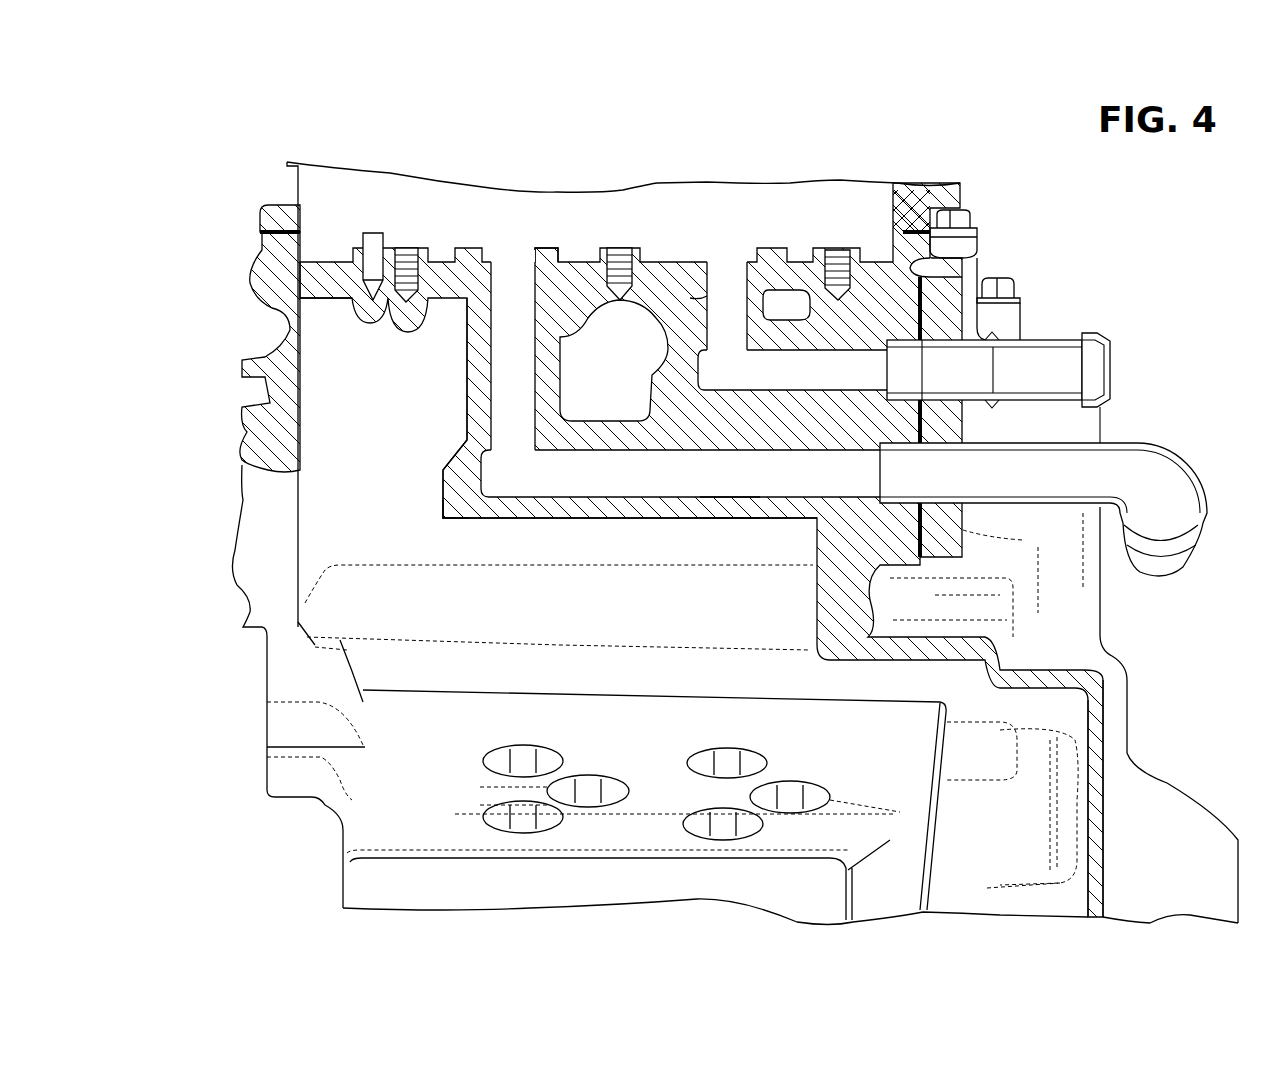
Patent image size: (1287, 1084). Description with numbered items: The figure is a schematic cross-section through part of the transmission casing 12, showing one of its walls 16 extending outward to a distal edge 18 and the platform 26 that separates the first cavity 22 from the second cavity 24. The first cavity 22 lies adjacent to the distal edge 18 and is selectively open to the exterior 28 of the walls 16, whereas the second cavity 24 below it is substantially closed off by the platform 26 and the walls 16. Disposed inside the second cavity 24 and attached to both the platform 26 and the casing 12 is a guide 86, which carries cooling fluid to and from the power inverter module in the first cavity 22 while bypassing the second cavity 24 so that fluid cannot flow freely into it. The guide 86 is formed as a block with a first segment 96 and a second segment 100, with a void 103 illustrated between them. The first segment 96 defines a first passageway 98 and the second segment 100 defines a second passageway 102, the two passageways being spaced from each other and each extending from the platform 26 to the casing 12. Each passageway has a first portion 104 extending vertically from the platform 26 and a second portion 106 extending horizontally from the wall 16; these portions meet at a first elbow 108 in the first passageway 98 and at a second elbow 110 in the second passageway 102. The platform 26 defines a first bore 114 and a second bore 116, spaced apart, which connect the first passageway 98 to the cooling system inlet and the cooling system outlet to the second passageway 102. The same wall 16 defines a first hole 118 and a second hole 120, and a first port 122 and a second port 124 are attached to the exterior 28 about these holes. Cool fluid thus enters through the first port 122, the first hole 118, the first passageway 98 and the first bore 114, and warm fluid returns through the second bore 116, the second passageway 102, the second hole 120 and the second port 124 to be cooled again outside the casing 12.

The casing 12 is at (1095, 725).
The walls 16 is at (282, 347).
The distal edge 18 is at (260, 218).
The first cavity 22 is at (362, 212).
The second cavity 24 is at (287, 535).
The platform 26 is at (322, 284).
The exterior 28 is at (1105, 830).
The guide 86 is at (524, 540).
The first segment 96 is at (768, 315).
The first passageway 98 is at (688, 295).
The second segment 100 is at (430, 447).
The second passageway 102 is at (722, 475).
The void 103 is at (578, 333).
The first portion 104 is at (512, 362).
The second portion 106 is at (830, 378).
The first elbow 108 is at (685, 398).
The second elbow 110 is at (462, 508).
The first bore 114 is at (750, 258).
The second bore 116 is at (543, 253).
The first hole 118 is at (905, 345).
The second hole 120 is at (905, 503).
The first port 122 is at (1048, 338).
The second port 124 is at (1017, 508).